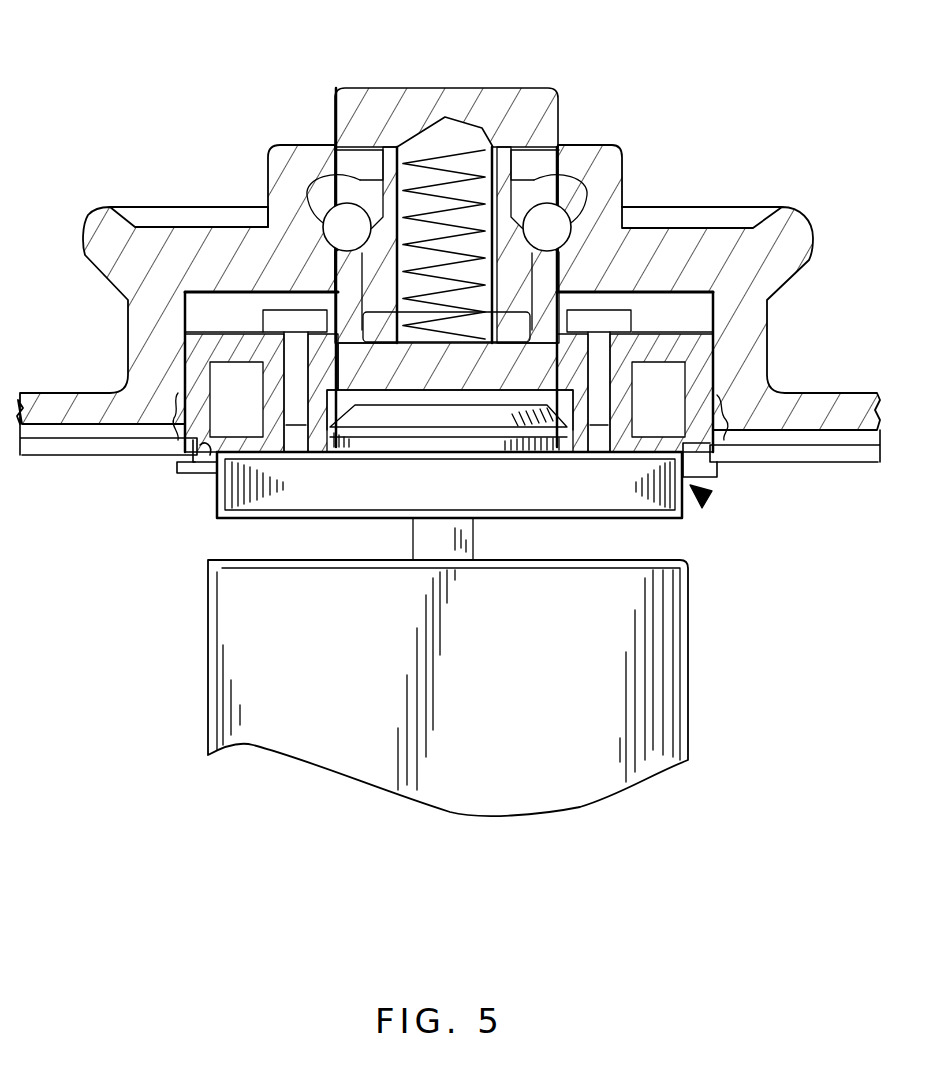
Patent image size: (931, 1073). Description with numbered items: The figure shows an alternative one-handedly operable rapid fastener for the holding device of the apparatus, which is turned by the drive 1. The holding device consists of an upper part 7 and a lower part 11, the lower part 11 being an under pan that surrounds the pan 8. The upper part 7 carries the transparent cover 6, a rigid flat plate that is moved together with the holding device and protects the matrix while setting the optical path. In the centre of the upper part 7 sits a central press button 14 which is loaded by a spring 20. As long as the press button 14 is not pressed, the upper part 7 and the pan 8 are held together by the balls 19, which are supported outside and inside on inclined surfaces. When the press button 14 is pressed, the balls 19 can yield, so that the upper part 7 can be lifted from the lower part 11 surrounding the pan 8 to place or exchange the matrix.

The drive 1 is at (682, 667).
The transparent cover 6 is at (827, 460).
The upper part 7 is at (752, 345).
The pan 8 is at (328, 375).
The lower part 11 is at (706, 500).
The central press button 14 is at (503, 100).
The balls 19 is at (345, 226).
The spring 20 is at (432, 197).